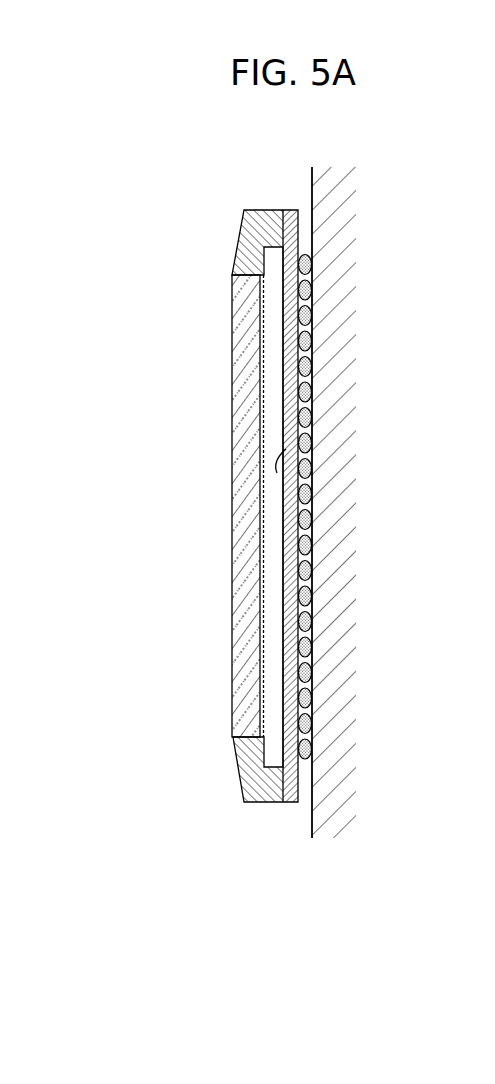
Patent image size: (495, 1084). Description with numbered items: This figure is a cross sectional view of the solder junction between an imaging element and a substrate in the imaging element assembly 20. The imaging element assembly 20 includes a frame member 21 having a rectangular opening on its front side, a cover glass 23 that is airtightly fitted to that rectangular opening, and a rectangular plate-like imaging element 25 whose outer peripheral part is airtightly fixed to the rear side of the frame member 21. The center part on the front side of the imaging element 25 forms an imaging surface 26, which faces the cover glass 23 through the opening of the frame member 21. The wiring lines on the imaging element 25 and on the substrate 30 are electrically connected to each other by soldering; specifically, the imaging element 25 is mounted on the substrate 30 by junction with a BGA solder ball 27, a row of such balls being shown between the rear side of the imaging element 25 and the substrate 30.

The imaging element assembly 20 is at (276, 486).
The frame member 21 is at (271, 209).
The cover glass 23 is at (240, 563).
The imaging element 25 is at (312, 528).
The imaging surface 26 is at (312, 441).
The BGA solder ball 27 is at (350, 507).
The substrate 30 is at (335, 227).